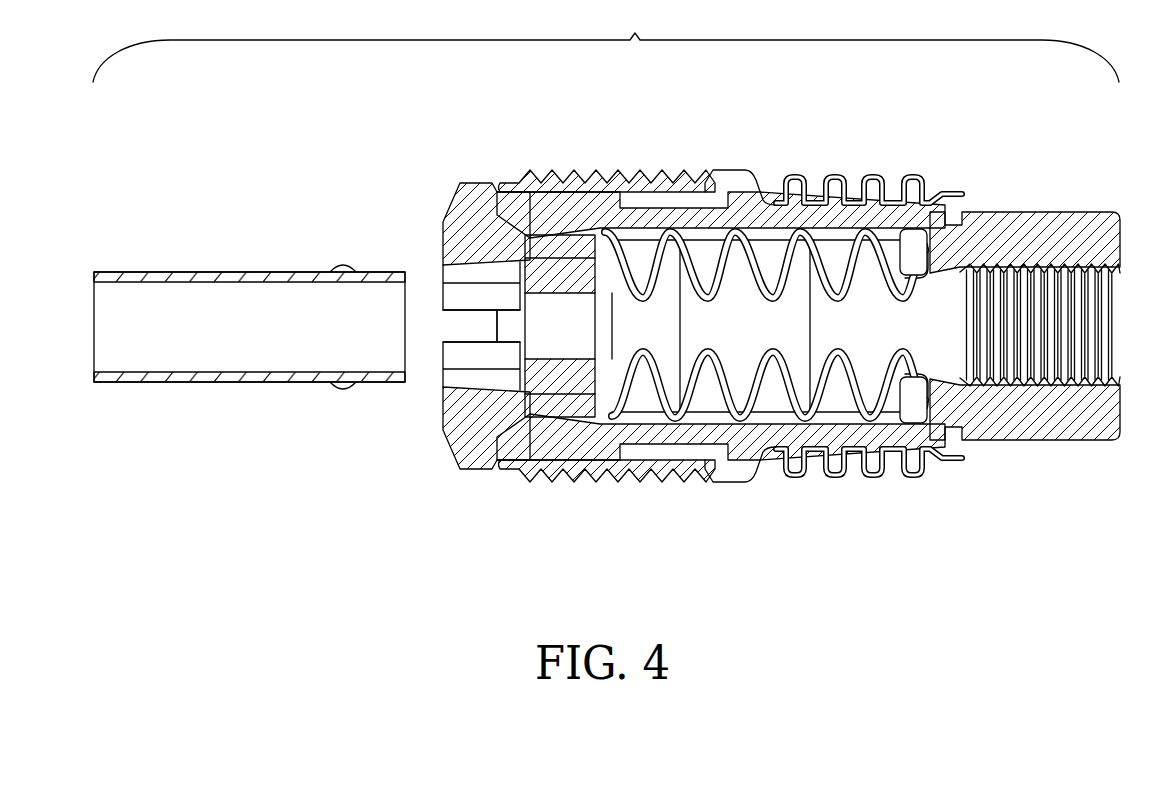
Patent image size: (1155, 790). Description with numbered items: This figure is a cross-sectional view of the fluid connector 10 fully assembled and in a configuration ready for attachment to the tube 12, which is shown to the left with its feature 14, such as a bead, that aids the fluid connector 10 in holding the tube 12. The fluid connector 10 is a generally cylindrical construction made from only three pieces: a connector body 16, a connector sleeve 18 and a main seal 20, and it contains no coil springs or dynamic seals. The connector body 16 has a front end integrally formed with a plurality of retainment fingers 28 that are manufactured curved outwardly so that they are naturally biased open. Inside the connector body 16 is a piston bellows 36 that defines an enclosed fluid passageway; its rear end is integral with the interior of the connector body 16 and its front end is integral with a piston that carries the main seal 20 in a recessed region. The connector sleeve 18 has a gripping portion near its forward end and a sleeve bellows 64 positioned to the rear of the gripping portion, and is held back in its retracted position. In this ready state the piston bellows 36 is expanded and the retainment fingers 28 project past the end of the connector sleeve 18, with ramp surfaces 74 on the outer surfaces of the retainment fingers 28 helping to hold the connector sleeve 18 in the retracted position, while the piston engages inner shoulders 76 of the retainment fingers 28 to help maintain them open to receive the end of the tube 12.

The fluid connector 10 is at (738, 133).
The tube 12 is at (288, 408).
The feature 14 is at (343, 264).
The connector body 16 is at (718, 472).
The connector sleeve 18 is at (722, 167).
The main seal 20 is at (545, 297).
The retainment fingers 28 is at (442, 225).
The piston bellows 36 is at (764, 350).
The sleeve bellows 64 is at (834, 172).
The ramp surfaces 74 is at (490, 182).
The inner shoulders 76 is at (546, 208).